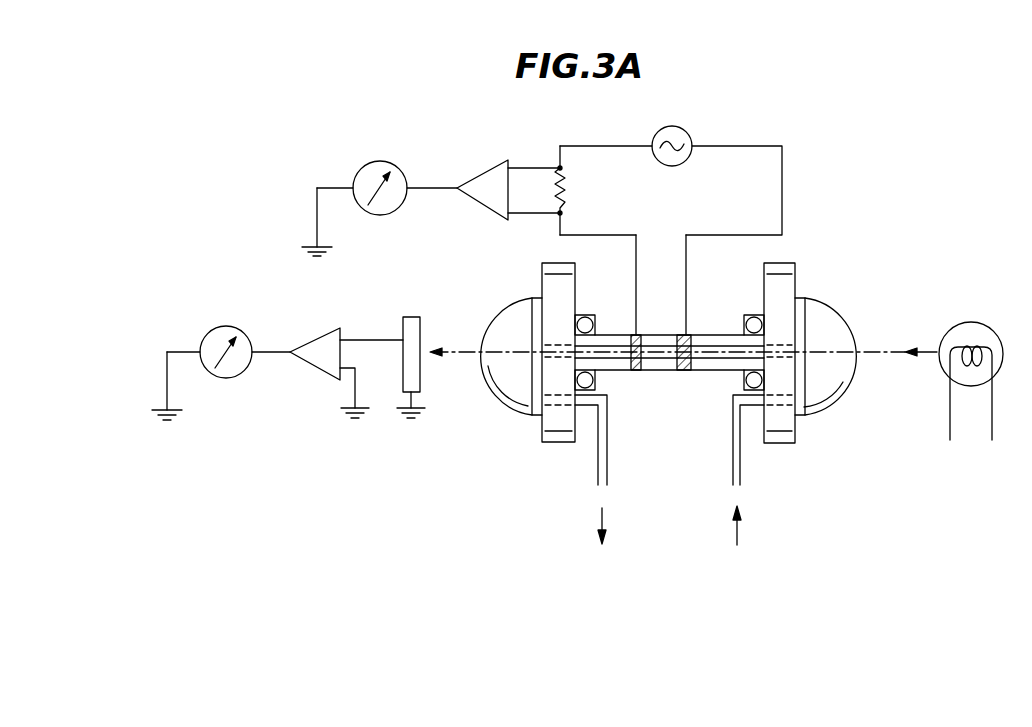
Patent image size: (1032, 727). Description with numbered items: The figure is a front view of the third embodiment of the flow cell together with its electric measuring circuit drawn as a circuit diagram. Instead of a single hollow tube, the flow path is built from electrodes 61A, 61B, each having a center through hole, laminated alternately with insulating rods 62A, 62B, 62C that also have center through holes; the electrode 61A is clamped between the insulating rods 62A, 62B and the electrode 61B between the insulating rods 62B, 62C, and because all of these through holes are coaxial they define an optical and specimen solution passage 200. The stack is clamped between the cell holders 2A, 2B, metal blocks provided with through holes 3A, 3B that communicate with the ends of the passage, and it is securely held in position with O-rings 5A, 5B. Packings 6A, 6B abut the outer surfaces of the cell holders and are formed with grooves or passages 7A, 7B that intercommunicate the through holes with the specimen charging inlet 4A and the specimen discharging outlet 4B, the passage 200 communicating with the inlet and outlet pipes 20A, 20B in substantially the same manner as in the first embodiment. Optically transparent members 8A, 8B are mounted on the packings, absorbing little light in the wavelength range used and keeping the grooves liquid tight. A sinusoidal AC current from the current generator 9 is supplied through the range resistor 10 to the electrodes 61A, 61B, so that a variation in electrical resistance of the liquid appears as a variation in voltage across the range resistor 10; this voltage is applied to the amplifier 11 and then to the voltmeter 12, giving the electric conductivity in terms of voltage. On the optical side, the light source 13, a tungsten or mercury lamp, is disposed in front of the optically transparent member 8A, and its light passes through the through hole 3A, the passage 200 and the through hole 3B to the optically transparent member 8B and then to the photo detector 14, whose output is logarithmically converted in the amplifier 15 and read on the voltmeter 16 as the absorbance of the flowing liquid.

The cell holder 2A is at (797, 263).
The cell holder 2B is at (545, 265).
The through hole 3A is at (806, 347).
The through hole 3B is at (553, 347).
The specimen charging inlet 4A is at (798, 425).
The specimen discharging outlet 4B is at (553, 402).
The O-ring 5A is at (754, 315).
The O-ring 5B is at (584, 315).
The packing 6A is at (805, 300).
The packing 6B is at (540, 298).
The groove or passage 7A is at (816, 388).
The groove or passage 7B is at (533, 378).
The optically transparent member 8A is at (838, 322).
The optically transparent member 8B is at (527, 305).
The AC power supply 9 is at (690, 135).
The range resistor 10 is at (566, 186).
The amplifier 11 is at (486, 161).
The voltmeter 12 is at (390, 161).
The light source 13 is at (985, 332).
The photo detector 14 is at (403, 320).
The amplifier 15 is at (321, 333).
The voltmeter 16 is at (247, 333).
The inlet pipe 20A is at (742, 468).
The outlet pipe 20B is at (598, 468).
The electrode 61A is at (690, 372).
The electrode 61B is at (634, 372).
The insulating rod 62A is at (699, 335).
The insulating rod 62B is at (660, 335).
The insulating rod 62C is at (612, 335).
The optical and specimen solution passage 200 is at (660, 372).